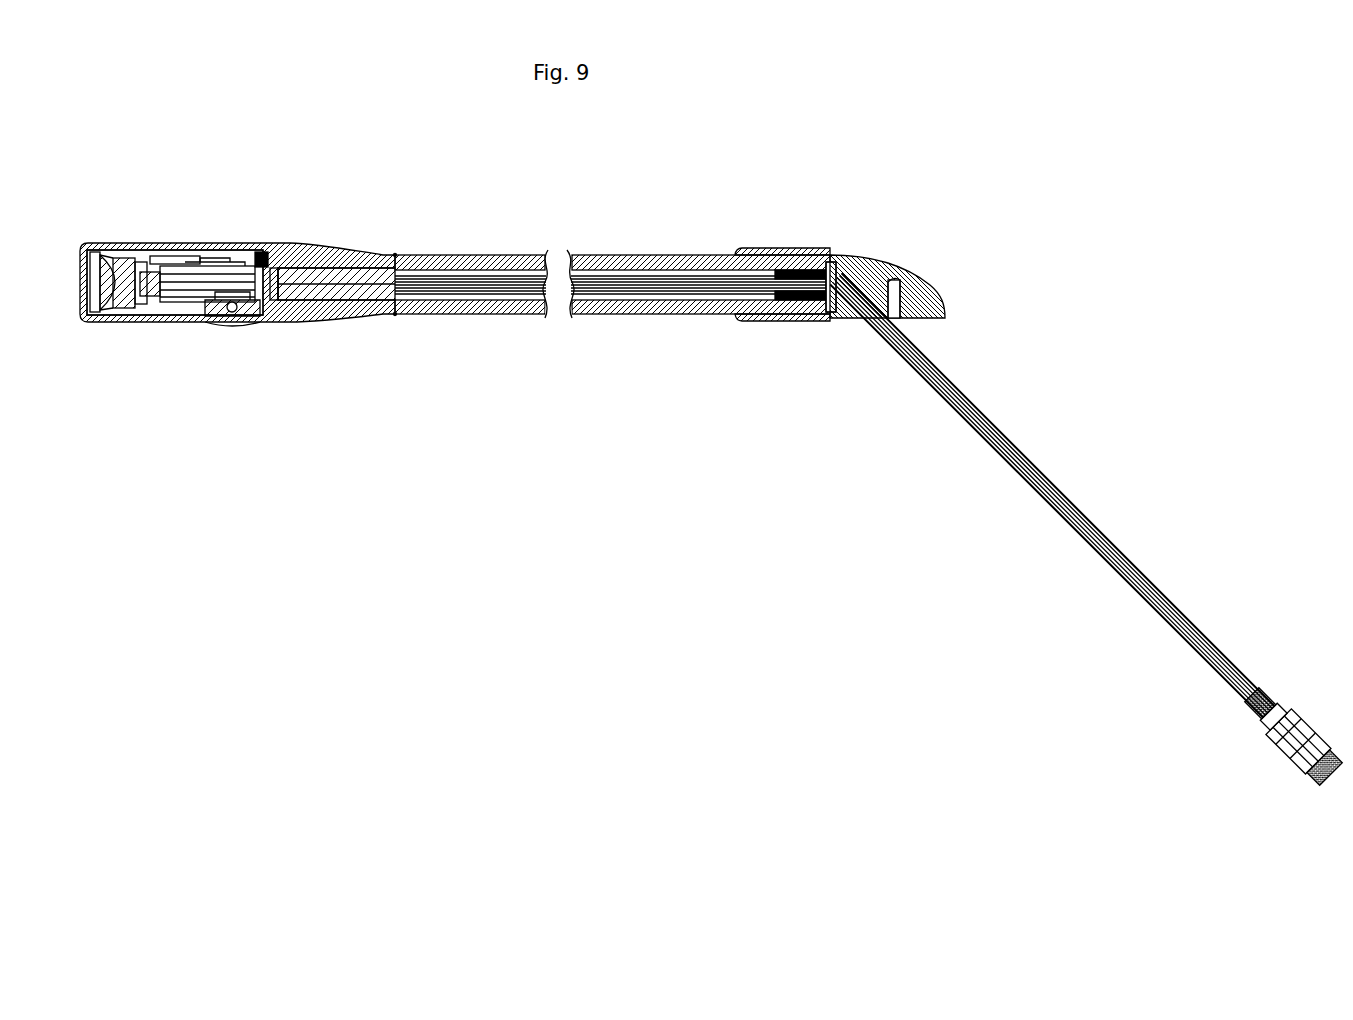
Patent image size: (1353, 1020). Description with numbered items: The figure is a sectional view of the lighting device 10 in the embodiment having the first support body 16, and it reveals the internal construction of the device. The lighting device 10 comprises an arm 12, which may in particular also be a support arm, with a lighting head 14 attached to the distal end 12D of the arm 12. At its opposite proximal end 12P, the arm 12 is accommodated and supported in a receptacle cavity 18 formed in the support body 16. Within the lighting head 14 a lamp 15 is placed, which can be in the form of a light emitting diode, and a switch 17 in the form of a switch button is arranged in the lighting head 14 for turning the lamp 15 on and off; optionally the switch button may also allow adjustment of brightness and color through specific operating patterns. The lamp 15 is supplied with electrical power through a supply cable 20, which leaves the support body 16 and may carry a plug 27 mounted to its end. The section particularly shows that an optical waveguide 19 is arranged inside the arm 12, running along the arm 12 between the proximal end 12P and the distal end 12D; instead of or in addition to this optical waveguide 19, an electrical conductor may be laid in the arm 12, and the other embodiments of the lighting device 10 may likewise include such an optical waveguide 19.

The lighting device 10 is at (518, 438).
The arm 12 is at (478, 255).
The distal end 12D is at (290, 325).
The proximal end 12P is at (828, 318).
The lighting head 14 is at (181, 242).
The lamp 15 is at (117, 242).
The support body 16 is at (857, 258).
The switch 17 is at (229, 320).
The receptacle cavity 18 is at (778, 250).
The optical waveguide 19 is at (625, 283).
The supply cable 20 is at (996, 437).
The plug 27 is at (1278, 745).